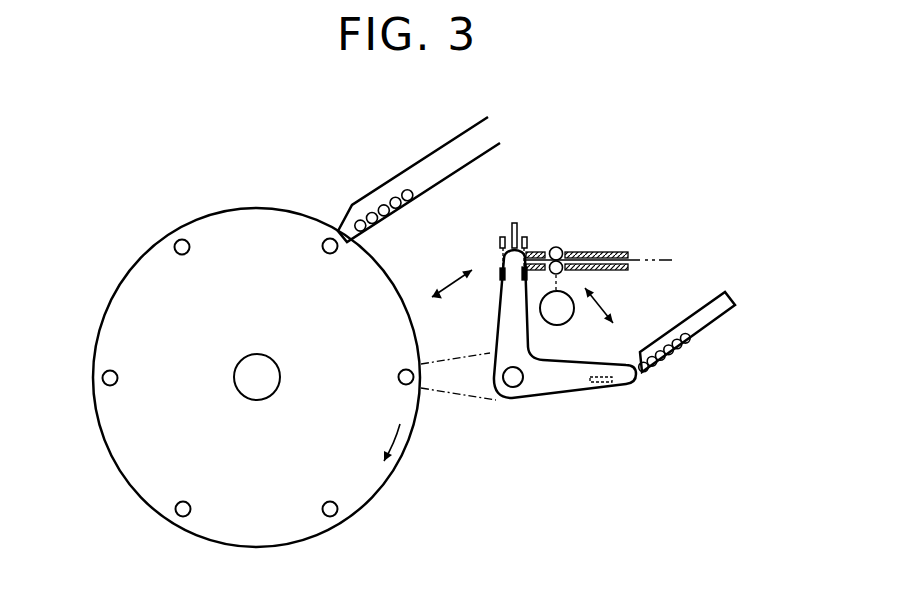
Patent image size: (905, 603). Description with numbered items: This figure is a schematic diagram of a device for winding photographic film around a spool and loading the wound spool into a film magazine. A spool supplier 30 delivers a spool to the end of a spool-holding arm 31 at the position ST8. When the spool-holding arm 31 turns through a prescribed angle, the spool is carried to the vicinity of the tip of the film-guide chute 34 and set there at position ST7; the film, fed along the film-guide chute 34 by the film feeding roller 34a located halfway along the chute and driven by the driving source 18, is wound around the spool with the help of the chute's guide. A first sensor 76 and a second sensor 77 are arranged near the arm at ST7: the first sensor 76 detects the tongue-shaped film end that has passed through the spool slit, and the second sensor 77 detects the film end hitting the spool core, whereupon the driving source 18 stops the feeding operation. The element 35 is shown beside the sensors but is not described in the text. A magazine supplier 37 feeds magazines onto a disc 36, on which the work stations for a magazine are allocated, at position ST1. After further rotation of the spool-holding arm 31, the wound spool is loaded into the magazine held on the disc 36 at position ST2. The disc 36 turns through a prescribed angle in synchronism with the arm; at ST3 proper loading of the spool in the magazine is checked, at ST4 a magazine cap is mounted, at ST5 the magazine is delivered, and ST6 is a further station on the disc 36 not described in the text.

The disc 36 is at (262, 217).
The magazine supplier 37 is at (431, 158).
The spool supplier 30 is at (713, 322).
The spool-holding arm 31 is at (543, 391).
The driving source 18 is at (572, 315).
The film-guide chute 34 is at (590, 252).
The film feeding roller 34a is at (561, 249).
The sensor 35 is at (515, 223).
The first sensor 76 is at (502, 236).
The second sensor 77 is at (527, 237).
The magazine setting station ST1 is at (353, 200).
The spool loading station ST2 is at (432, 376).
The loading check station ST3 is at (344, 532).
The cap mounting station ST4 is at (172, 532).
The magazine delivery station ST5 is at (92, 378).
The station 6 ST6 is at (170, 225).
The film winding station ST7 is at (486, 255).
The spool receiving station ST8 is at (633, 406).